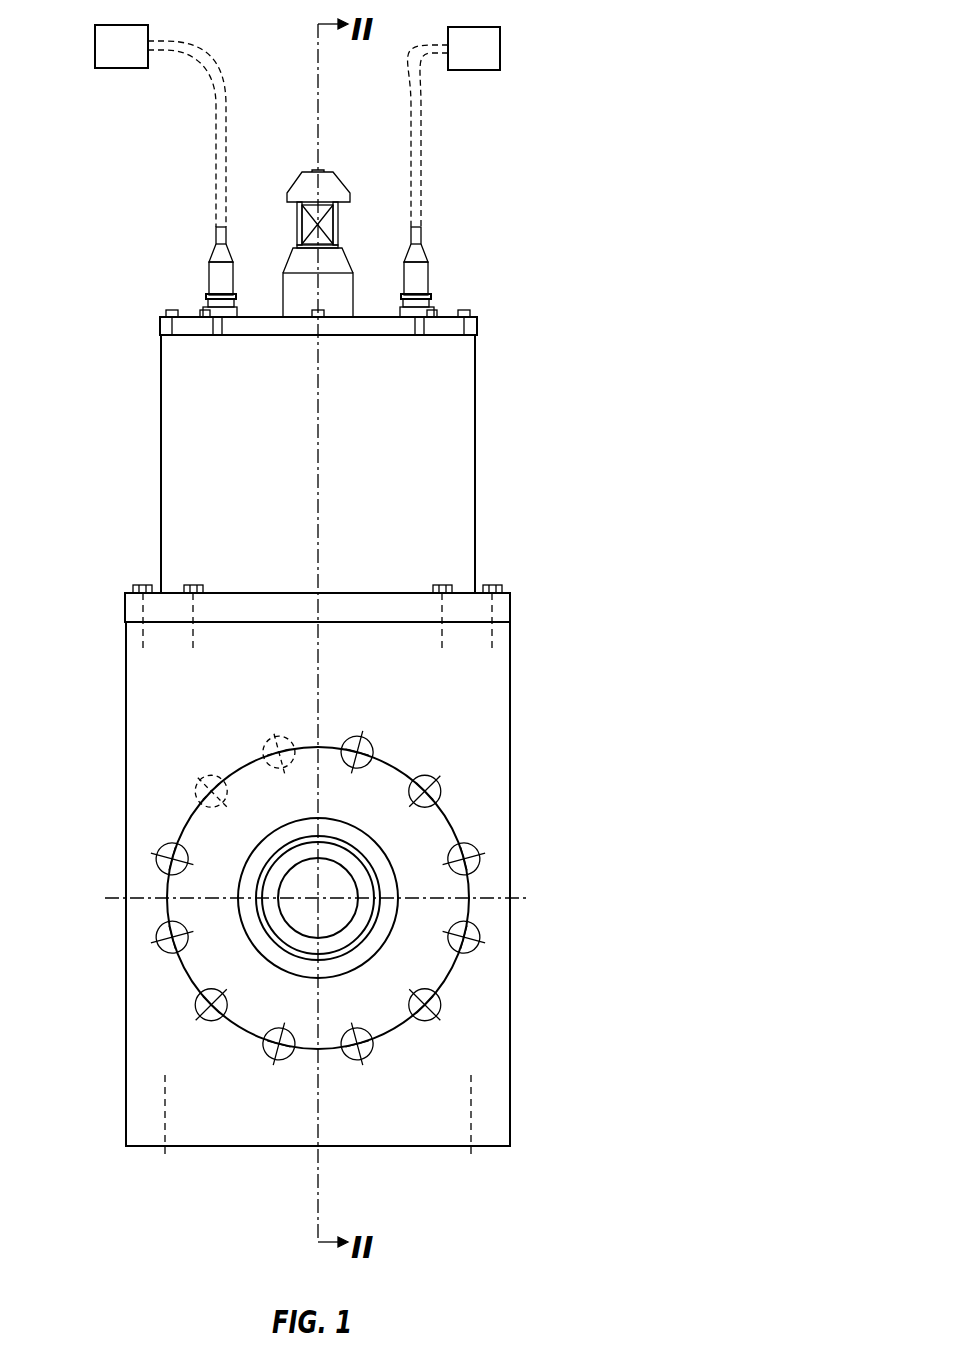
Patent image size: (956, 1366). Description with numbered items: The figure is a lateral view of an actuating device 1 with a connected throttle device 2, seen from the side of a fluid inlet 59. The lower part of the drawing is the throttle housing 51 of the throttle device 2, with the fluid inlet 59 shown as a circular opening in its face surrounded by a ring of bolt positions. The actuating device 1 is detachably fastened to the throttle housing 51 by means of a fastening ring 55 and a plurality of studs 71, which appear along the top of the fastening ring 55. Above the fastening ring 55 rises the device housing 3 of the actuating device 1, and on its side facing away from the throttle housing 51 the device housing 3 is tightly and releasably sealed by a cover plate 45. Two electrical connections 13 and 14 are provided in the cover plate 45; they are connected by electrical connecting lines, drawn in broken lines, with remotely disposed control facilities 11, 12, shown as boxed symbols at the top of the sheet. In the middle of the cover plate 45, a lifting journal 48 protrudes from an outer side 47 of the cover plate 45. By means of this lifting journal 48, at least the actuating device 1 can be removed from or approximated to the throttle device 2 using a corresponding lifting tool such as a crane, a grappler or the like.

The actuating device 1 is at (558, 46).
The throttle device 2 is at (561, 776).
The device housing 3 is at (462, 456).
The control facility 11 is at (139, 61).
The control facility 12 is at (492, 64).
The electrical connection 13 is at (430, 308).
The electrical connection 14 is at (237, 308).
The cover plate 45 is at (468, 327).
The outer side 47 is at (388, 316).
The lifting journal 48 is at (331, 160).
The throttle housing 51 is at (512, 717).
The fastening ring 55 is at (505, 614).
The fluid inlet 59 is at (338, 877).
The studs 71 is at (485, 590).